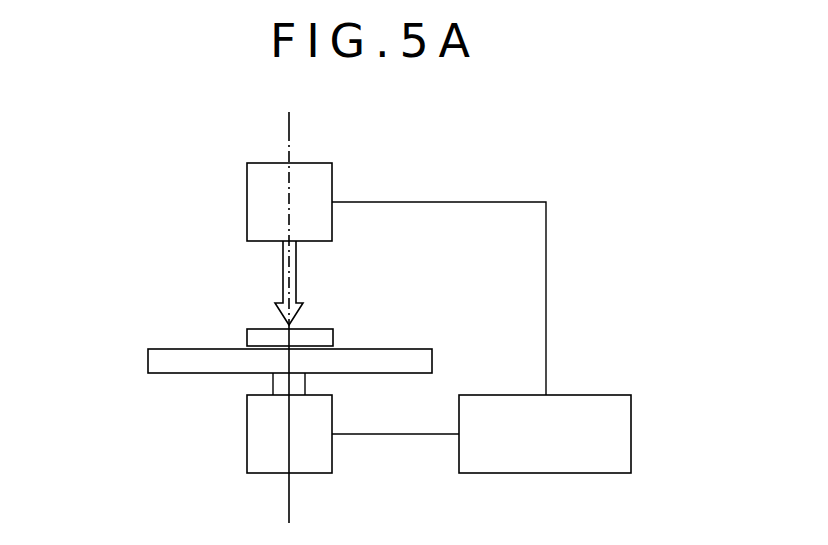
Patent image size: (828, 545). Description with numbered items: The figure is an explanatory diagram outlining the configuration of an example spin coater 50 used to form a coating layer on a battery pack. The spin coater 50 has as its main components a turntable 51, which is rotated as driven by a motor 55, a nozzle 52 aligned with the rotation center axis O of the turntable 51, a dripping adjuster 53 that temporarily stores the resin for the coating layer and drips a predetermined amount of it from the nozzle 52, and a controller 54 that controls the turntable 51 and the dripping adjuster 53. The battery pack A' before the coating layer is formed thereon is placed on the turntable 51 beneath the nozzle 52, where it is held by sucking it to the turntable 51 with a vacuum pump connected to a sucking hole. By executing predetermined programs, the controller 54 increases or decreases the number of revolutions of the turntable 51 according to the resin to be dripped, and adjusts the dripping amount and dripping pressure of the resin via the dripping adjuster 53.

The spin coater 50 is at (126, 204).
The turntable 51 is at (160, 349).
The nozzle 52 is at (283, 268).
The dripping adjuster 53 is at (332, 163).
The controller 54 is at (631, 434).
The motor 55 is at (247, 434).
The rotation center axis O is at (289, 128).
The battery pack before the coating layer is formed A' is at (255, 327).